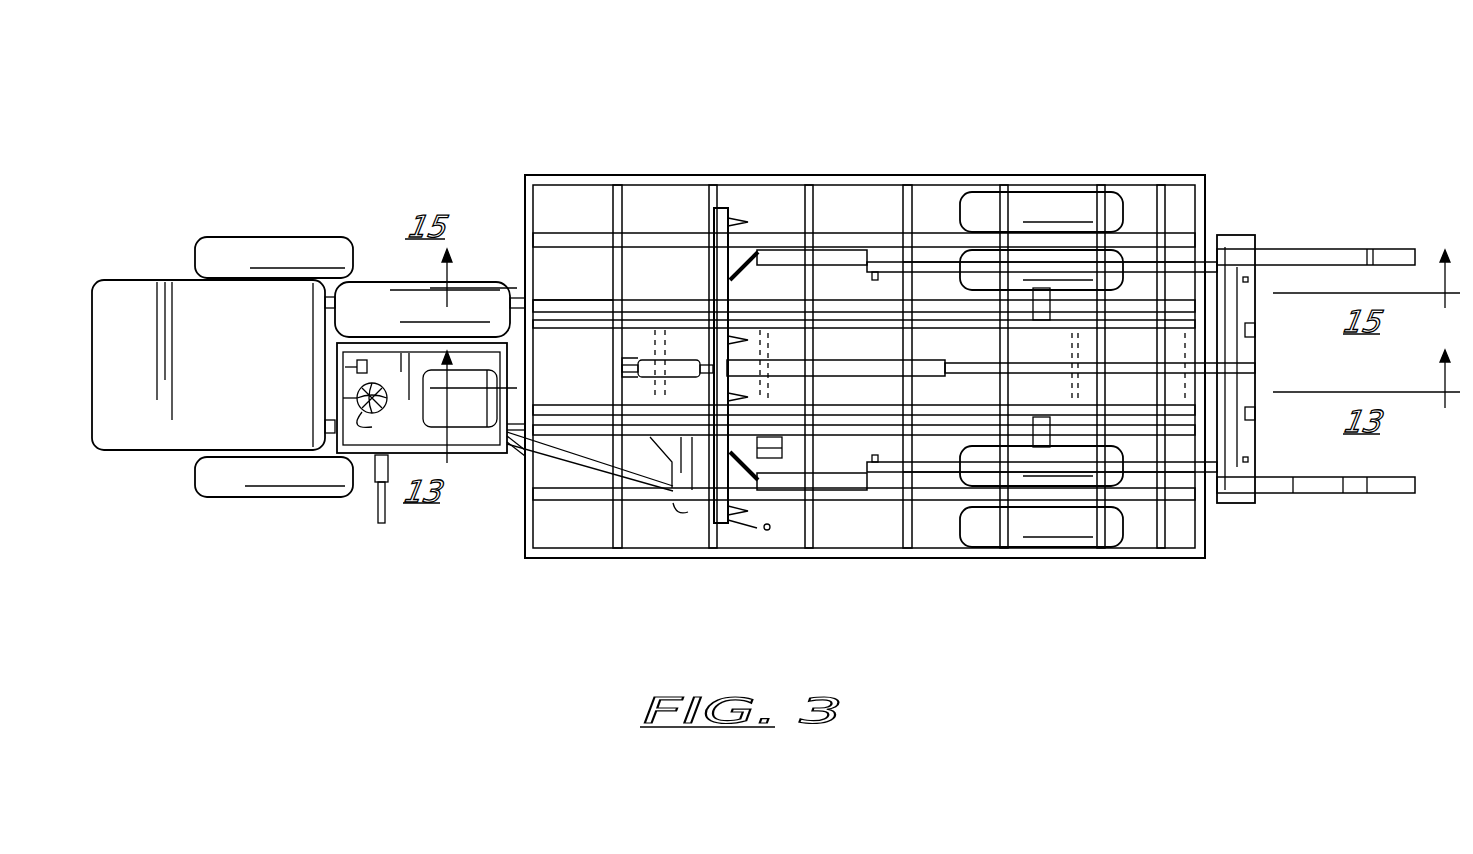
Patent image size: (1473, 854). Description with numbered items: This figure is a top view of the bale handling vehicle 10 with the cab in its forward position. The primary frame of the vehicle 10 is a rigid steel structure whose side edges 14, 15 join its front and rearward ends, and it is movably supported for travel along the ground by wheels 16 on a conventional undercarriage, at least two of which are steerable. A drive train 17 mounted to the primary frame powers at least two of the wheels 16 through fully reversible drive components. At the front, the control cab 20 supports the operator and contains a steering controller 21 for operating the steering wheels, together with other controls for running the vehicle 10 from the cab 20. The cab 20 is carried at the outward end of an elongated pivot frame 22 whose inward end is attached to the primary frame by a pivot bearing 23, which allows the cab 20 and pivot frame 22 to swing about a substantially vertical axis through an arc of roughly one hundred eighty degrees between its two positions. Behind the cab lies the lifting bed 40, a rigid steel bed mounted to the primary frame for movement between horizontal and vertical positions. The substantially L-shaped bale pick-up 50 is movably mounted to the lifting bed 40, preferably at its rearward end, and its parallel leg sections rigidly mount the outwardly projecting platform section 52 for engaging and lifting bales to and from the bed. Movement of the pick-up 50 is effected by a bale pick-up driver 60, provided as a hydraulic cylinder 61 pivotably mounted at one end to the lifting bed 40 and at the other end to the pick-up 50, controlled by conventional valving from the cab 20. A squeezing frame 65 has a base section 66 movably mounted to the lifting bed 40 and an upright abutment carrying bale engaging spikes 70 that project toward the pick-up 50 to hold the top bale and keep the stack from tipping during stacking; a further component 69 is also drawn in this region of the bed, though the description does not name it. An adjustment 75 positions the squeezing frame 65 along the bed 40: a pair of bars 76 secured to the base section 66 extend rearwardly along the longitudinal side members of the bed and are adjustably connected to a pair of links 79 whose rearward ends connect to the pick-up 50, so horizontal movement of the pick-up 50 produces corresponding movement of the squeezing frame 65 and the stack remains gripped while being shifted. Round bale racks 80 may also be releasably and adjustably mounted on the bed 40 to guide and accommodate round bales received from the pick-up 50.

The vehicle 10 is at (494, 145).
The side edge 14 is at (570, 427).
The side edge 15 is at (547, 293).
The wheels 16 is at (283, 253).
The drive train 17 is at (129, 268).
The control cab 20 is at (363, 470).
The steering controller 21 is at (372, 427).
The pivot frame 22 is at (517, 453).
The pivot bearing 23 is at (767, 531).
The lifting bed 40 is at (1240, 222).
The bale pick-up 50 is at (1316, 232).
The platform section 52 is at (1393, 258).
The bale pick-up driver 60 is at (938, 384).
The hydraulic cylinder 61 is at (918, 360).
The squeezing frame 65 is at (740, 289).
The base section 66 is at (820, 257).
The hydraulic cylinder 69 is at (695, 368).
The bale engaging spikes 70 is at (737, 215).
The adjustment 75 is at (862, 255).
The bars 76 is at (775, 257).
The links 79 is at (935, 270).
The round bale racks 80 is at (1247, 282).